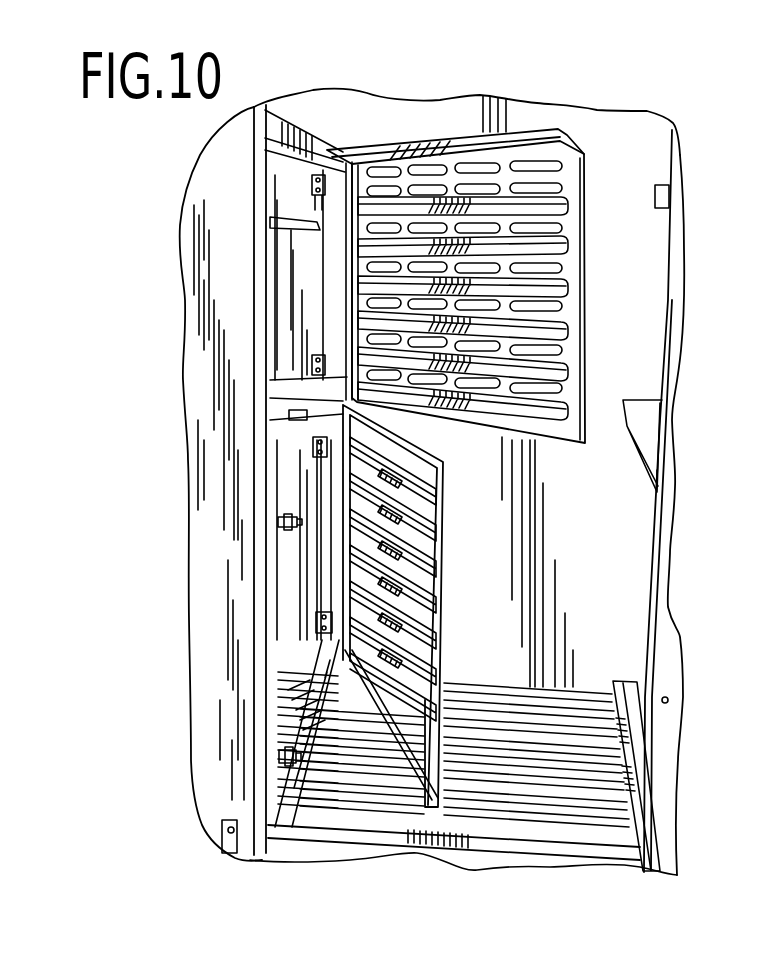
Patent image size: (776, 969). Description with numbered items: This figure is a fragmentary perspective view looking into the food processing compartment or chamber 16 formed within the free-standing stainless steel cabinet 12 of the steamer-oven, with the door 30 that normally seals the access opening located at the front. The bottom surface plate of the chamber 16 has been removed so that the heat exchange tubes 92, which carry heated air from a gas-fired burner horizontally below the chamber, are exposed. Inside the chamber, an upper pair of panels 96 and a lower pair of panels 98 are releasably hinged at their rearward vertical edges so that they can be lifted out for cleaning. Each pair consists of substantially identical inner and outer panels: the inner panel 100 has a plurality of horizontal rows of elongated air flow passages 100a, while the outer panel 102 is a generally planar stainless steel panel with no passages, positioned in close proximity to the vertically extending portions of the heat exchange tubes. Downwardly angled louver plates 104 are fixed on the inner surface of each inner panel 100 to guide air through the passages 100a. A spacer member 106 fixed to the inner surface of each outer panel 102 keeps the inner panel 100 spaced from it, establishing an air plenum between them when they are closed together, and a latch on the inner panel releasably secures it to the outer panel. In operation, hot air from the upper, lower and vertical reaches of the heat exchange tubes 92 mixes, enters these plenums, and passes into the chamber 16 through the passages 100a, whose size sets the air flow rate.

The cabinet 12 is at (307, 863).
The food processing compartment or chamber 16 is at (627, 333).
The door 30 is at (182, 803).
The heat exchange tubes 92 is at (507, 767).
The upper pair of inner and outer panels 96 is at (394, 114).
The lower pair of inner and outer panels 98 is at (453, 600).
The inner panel 100 is at (587, 183).
The air flow passages 100a is at (547, 185).
The outer panel 102 is at (273, 265).
The louver plates 104 is at (556, 208).
The spacer member 106 is at (280, 523).